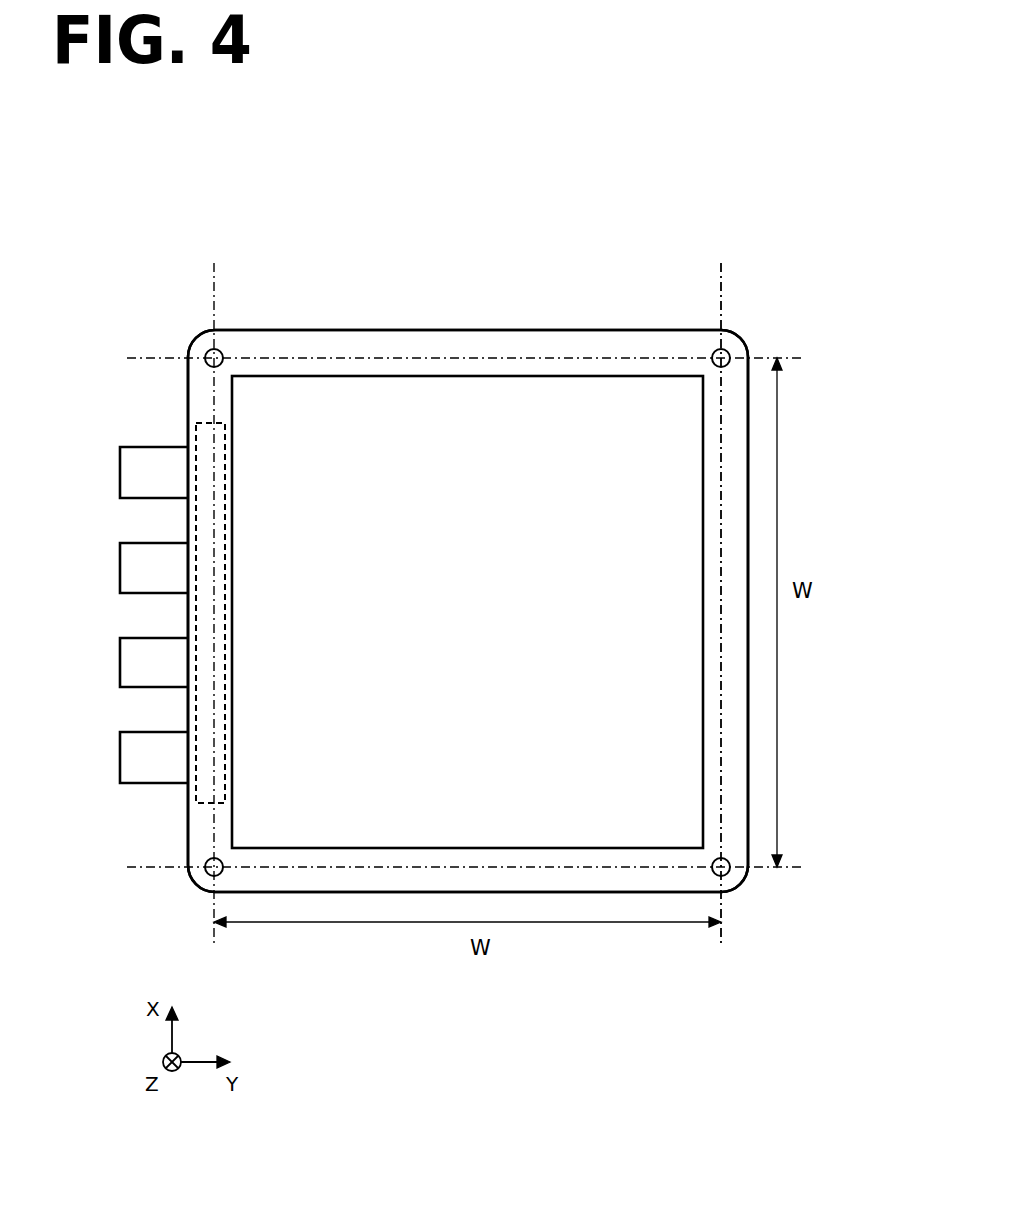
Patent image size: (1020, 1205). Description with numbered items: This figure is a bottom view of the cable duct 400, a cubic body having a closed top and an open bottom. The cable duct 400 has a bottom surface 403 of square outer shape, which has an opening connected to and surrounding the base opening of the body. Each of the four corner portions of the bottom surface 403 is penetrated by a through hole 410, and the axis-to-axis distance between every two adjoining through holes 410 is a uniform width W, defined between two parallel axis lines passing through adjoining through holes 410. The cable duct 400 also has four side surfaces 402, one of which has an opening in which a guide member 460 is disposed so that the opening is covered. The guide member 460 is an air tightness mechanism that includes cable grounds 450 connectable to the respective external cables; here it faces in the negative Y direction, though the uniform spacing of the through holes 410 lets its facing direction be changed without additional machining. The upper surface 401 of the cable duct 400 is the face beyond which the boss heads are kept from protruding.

The cable duct 400 is at (543, 300).
The upper surface 401 is at (469, 612).
The side surface 402 is at (447, 330).
The bottom surface 403 is at (718, 718).
The through hole 410 is at (203, 356).
The cable ground 450 is at (149, 446).
The guide member 460 is at (225, 497).